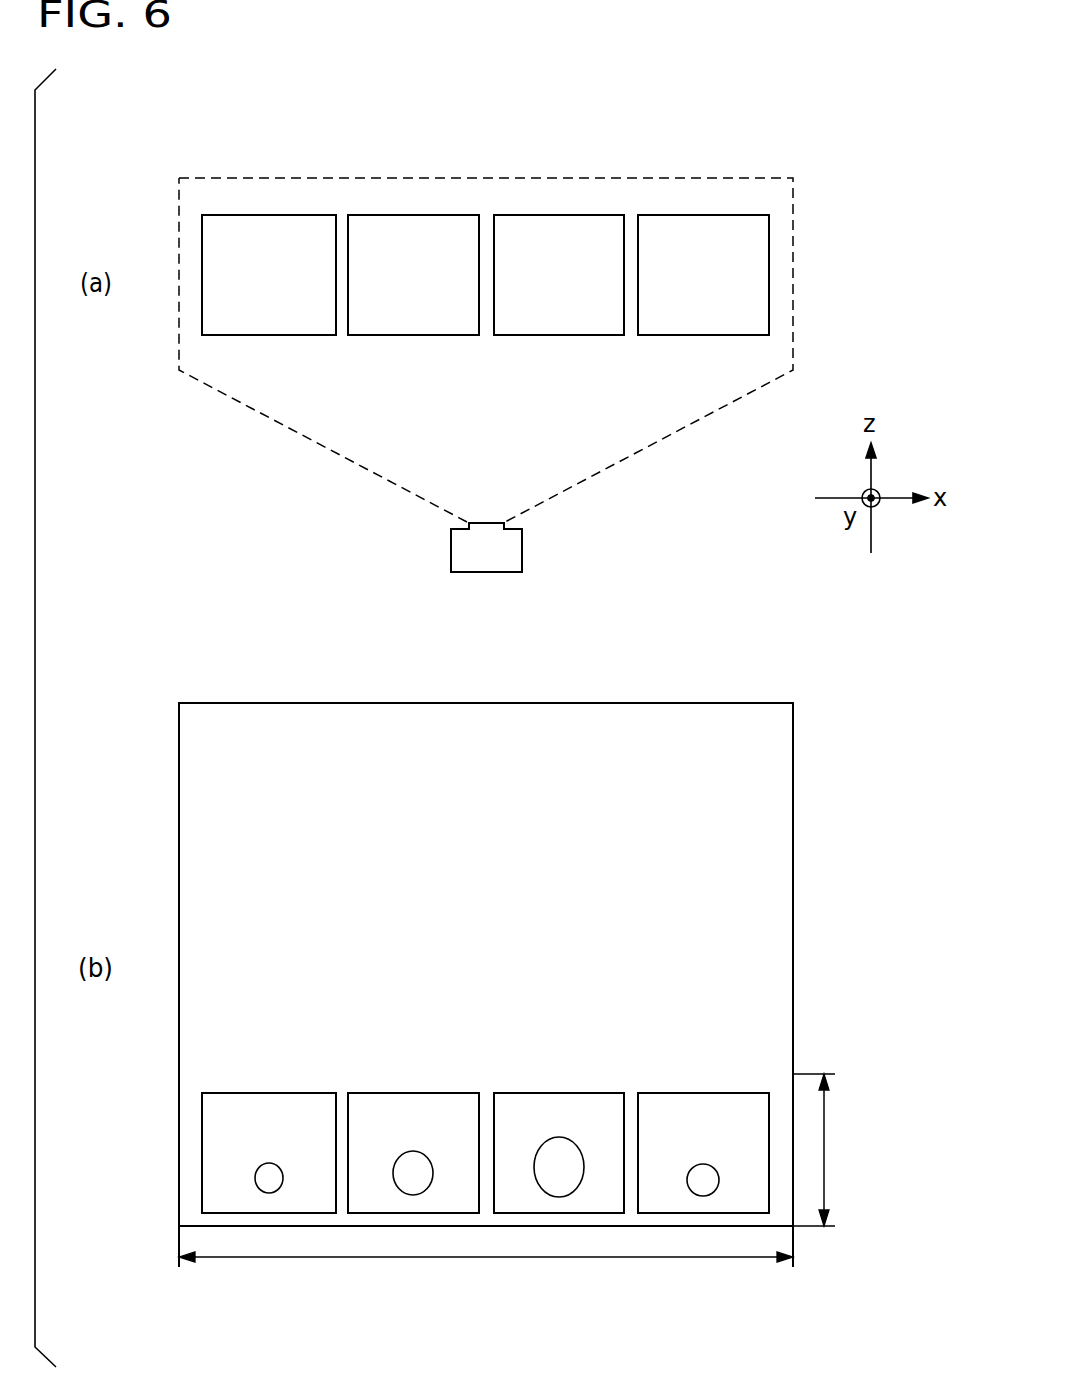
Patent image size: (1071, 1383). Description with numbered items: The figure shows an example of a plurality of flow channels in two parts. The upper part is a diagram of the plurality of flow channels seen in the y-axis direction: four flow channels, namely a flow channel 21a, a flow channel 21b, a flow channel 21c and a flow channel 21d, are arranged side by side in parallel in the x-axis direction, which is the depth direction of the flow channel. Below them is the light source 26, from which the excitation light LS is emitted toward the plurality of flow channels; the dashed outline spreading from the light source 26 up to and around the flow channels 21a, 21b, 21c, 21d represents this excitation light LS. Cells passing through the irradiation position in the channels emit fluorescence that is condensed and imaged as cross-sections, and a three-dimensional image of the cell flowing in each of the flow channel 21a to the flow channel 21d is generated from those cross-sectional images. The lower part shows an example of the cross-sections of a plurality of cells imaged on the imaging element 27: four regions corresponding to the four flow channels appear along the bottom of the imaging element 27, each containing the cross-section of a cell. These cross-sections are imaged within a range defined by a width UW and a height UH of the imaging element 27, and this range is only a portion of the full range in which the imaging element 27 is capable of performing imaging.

The flow channel 21a is at (267, 215).
The flow channel 21b is at (412, 215).
The flow channel 21c is at (557, 215).
The flow channel 21d is at (702, 215).
The light source 26 is at (522, 550).
The imaging element 27 is at (711, 703).
The excitation light LS is at (793, 284).
The height UH is at (830, 1150).
The width UW is at (486, 1275).